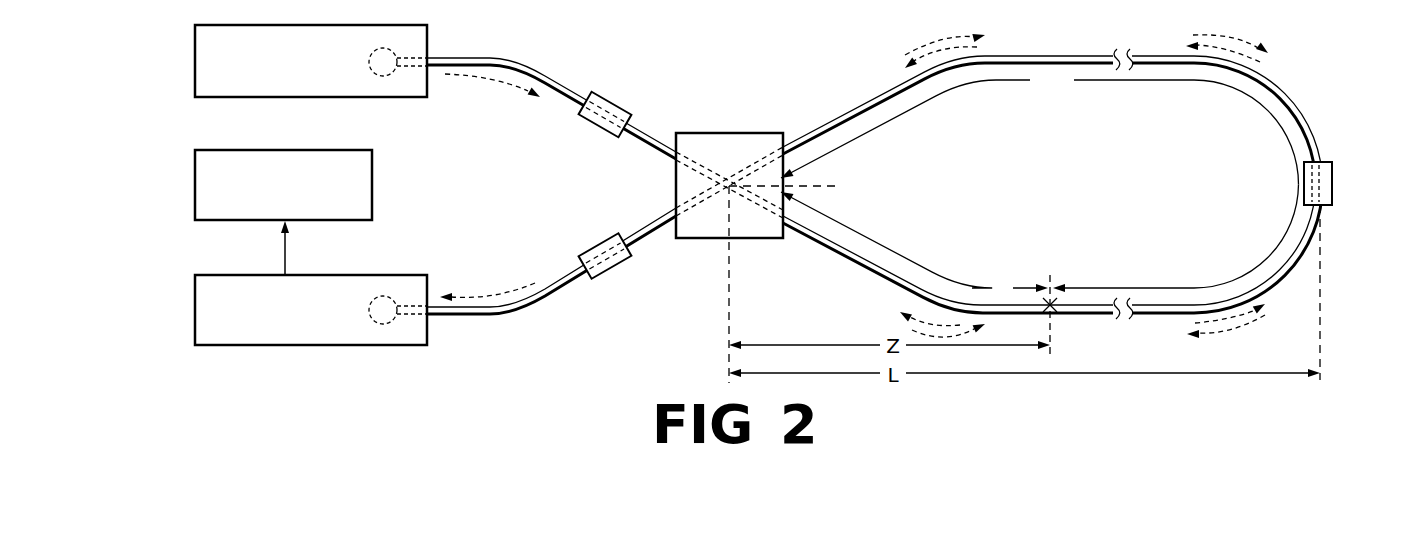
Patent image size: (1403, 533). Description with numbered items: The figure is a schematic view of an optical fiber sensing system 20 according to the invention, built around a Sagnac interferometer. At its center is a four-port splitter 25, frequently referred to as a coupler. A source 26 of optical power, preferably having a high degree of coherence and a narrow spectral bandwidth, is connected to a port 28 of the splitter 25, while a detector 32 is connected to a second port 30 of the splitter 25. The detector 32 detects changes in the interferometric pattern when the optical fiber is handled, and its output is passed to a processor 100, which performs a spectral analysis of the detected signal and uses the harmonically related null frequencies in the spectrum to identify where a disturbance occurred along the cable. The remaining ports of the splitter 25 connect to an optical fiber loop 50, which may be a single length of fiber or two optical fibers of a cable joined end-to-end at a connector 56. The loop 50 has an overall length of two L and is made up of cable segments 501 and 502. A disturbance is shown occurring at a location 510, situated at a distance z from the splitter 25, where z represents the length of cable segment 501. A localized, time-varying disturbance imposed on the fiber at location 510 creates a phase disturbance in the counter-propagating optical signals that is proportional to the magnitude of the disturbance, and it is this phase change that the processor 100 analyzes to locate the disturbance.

The source 26 is at (257, 25).
The processor 100 is at (258, 150).
The detector 32 is at (257, 275).
The system 20 is at (745, 218).
The splitter 25 is at (729, 133).
The port 28 is at (676, 160).
The second port 30 is at (676, 213).
The optical fiber loop 50 is at (1012, 56).
The cable segment 501 is at (1040, 243).
The cable segment 502 is at (1040, 127).
The location 510 is at (1050, 250).
The connector 56 is at (1333, 180).